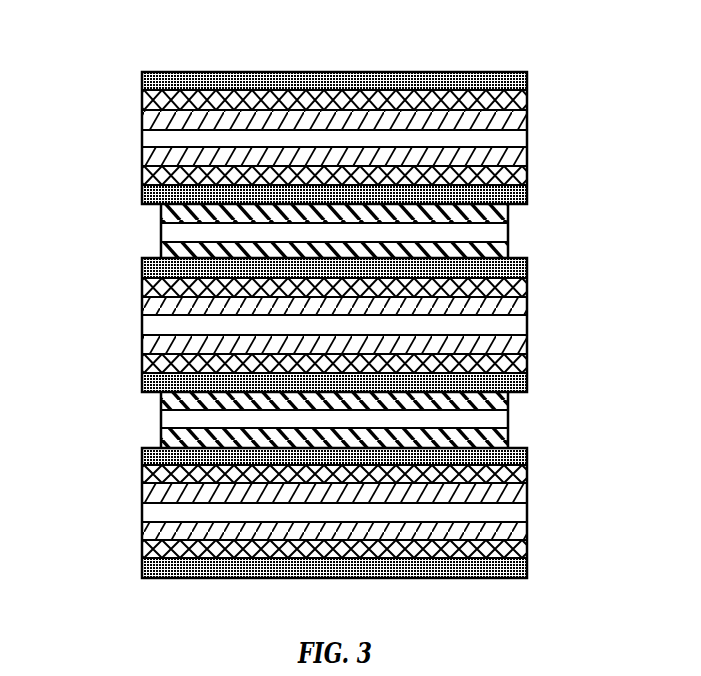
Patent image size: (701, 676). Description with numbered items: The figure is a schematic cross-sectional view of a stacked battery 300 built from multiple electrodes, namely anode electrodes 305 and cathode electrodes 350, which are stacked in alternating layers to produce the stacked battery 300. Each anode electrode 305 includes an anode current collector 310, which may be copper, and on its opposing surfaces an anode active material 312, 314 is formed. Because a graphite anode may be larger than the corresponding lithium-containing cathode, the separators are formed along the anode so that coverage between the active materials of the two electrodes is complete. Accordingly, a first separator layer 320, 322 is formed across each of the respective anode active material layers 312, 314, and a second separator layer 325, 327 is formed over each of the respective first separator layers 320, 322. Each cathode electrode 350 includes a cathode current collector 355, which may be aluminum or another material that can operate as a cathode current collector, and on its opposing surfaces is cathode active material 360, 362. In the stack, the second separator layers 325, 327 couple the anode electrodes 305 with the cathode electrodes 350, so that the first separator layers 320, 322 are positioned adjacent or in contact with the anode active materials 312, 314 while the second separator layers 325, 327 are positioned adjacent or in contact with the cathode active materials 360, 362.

The stacked battery 300 is at (86, 87).
The anode electrode 305 is at (400, 72).
The second separator layer 325 is at (527, 82).
The first separator layer 320 is at (527, 101).
The anode active material 312 is at (142, 118).
The anode current collector 310 is at (527, 137).
The anode active material 314 is at (142, 157).
The first separator layer 322 is at (527, 175).
The second separator layer 327 is at (527, 204).
The cathode electrode 350 is at (161, 428).
The cathode current collector 355 is at (508, 421).
The cathode active material 360 is at (161, 402).
The cathode active material 362 is at (161, 437).